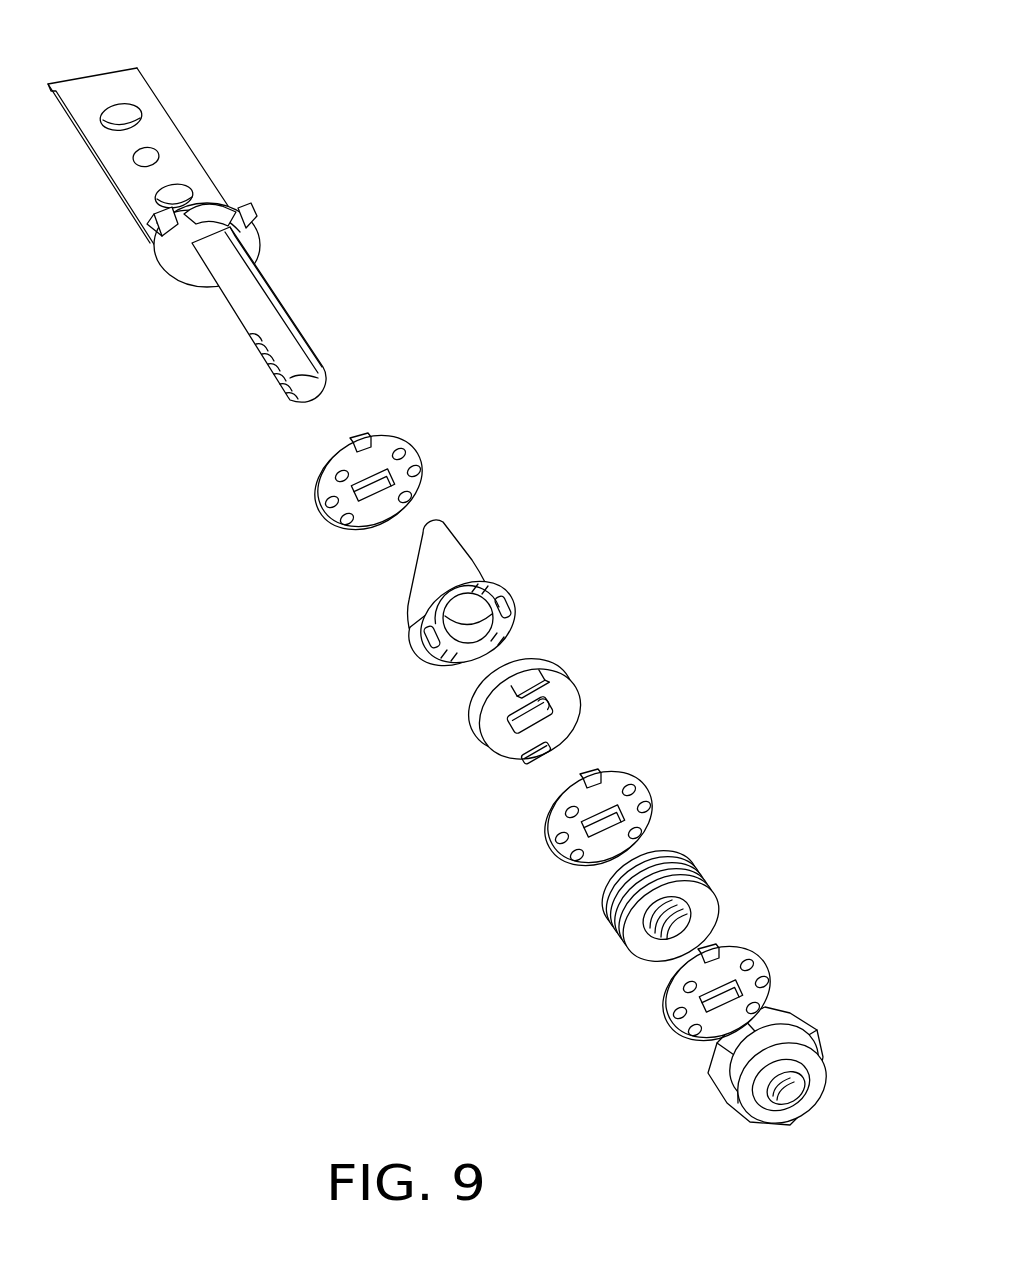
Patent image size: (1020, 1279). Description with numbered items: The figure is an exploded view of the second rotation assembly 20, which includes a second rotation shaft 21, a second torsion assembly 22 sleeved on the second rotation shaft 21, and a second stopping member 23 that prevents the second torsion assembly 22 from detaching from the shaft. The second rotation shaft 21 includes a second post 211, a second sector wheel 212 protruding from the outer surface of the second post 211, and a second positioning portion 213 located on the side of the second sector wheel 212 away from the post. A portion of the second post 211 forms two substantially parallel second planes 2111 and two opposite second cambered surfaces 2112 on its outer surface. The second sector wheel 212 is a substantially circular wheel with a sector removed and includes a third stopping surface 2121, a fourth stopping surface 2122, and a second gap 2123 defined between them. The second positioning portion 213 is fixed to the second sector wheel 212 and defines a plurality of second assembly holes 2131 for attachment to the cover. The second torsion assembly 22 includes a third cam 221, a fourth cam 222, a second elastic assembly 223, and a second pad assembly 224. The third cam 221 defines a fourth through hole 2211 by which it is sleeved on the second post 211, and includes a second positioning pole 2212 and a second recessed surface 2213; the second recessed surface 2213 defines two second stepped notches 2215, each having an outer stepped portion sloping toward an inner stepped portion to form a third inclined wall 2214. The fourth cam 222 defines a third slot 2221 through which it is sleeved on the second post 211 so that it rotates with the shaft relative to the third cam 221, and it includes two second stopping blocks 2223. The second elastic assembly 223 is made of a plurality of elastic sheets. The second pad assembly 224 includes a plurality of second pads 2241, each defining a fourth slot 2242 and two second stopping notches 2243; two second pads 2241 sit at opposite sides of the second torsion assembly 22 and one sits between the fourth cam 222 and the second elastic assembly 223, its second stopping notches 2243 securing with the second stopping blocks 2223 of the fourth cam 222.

The second rotation assembly 20 is at (503, 205).
The second rotation shaft 21 is at (197, 128).
The second post 211 is at (313, 378).
The second planes 2111 is at (253, 295).
The second cambered surfaces 2112 is at (243, 323).
The second sector wheel 212 is at (260, 240).
The third stopping surface 2121 is at (247, 218).
The fourth stopping surface 2122 is at (163, 220).
The second gap 2123 is at (208, 213).
The second positioning portion 213 is at (187, 170).
The second assembly holes 2131 is at (120, 112).
The second torsion assembly 22 is at (447, 960).
The third cam 221 is at (405, 648).
The fourth through hole 2211 is at (482, 620).
The second positioning pole 2212 is at (440, 533).
The second recessed surface 2213 is at (503, 595).
The third inclined wall 2214 is at (440, 607).
The second stepped notches 2215 is at (460, 595).
The fourth cam 222 is at (473, 752).
The third slot 2221 is at (535, 695).
The second stopping blocks 2223 is at (548, 715).
The second elastic assembly 223 is at (600, 905).
The second pad assembly 224 is at (540, 850).
The second pads 2241 is at (407, 435).
The fourth slot 2242 is at (665, 817).
The second stopping notches 2243 is at (640, 757).
The second stopping member 23 is at (790, 1023).